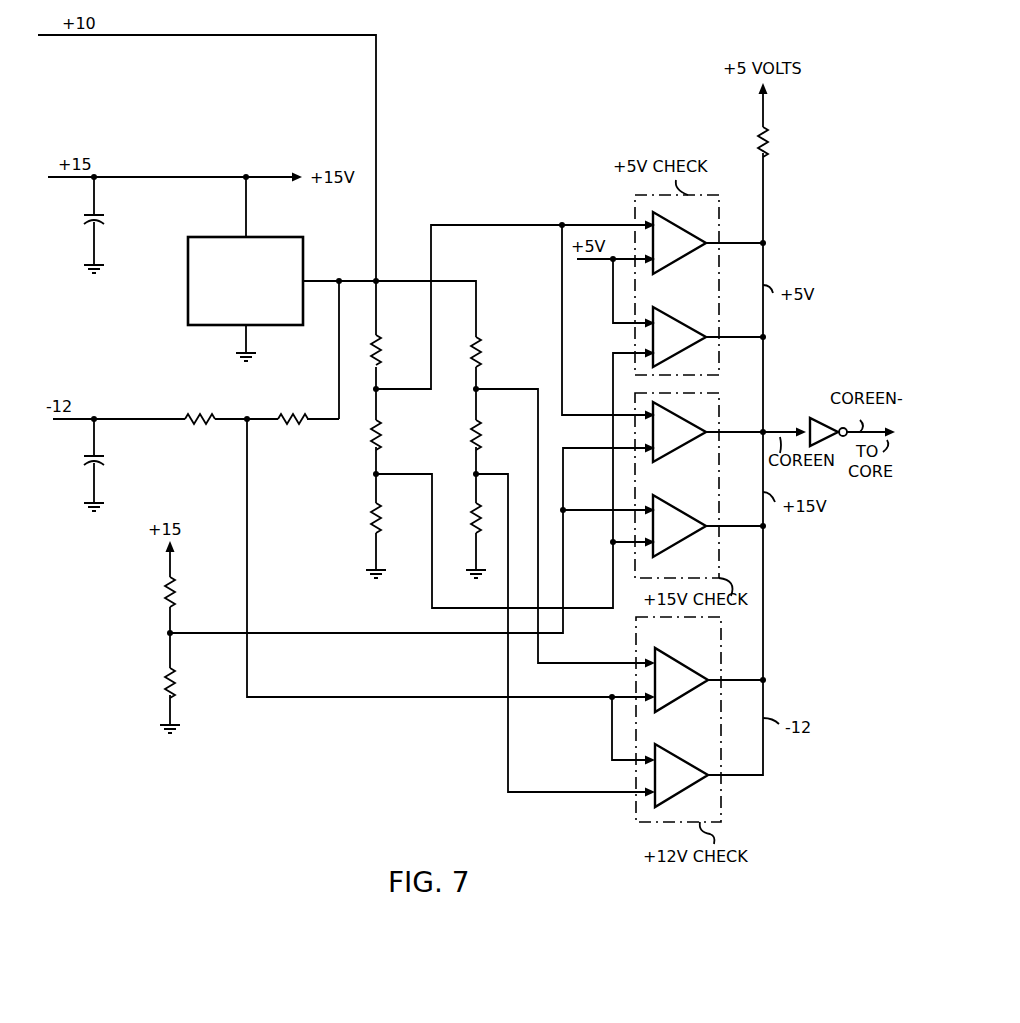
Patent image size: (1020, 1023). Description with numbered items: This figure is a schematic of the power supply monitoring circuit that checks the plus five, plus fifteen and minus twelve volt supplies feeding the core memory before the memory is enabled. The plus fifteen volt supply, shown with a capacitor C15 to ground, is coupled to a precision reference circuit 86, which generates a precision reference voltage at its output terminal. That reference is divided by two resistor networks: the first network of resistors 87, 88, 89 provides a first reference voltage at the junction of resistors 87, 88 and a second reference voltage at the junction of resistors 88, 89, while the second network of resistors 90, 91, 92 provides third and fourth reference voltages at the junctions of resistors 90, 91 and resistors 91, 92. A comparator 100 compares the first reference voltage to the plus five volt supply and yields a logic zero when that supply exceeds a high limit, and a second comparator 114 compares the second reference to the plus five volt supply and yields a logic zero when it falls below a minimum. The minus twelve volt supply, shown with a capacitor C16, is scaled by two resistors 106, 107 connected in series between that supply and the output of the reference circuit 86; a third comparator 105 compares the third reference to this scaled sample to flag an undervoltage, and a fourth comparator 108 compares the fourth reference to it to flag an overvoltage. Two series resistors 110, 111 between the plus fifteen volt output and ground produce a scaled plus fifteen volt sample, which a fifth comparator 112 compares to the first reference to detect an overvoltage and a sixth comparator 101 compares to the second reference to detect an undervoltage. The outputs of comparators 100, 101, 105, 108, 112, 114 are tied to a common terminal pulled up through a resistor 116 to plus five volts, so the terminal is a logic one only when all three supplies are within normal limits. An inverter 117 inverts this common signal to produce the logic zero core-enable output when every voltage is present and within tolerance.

The precision reference circuit 86 is at (288, 237).
The resistor 87 is at (372, 360).
The resistor 88 is at (381, 429).
The resistor 89 is at (381, 519).
The resistor 90 is at (485, 345).
The resistor 91 is at (485, 432).
The resistor 92 is at (472, 519).
The comparator 100 is at (675, 226).
The sixth comparator 101 is at (672, 495).
The third comparator 105 is at (685, 658).
The resistor 106 is at (196, 414).
The resistor 107 is at (292, 429).
The fourth comparator 108 is at (685, 755).
The resistor 110 is at (175, 589).
The resistor 111 is at (175, 680).
The fifth comparator 112 is at (672, 401).
The second comparator 114 is at (671, 312).
The resistor 116 is at (771, 142).
The inverter 117 is at (805, 420).
The capacitor C15 is at (86, 219).
The capacitor C16 is at (82, 460).